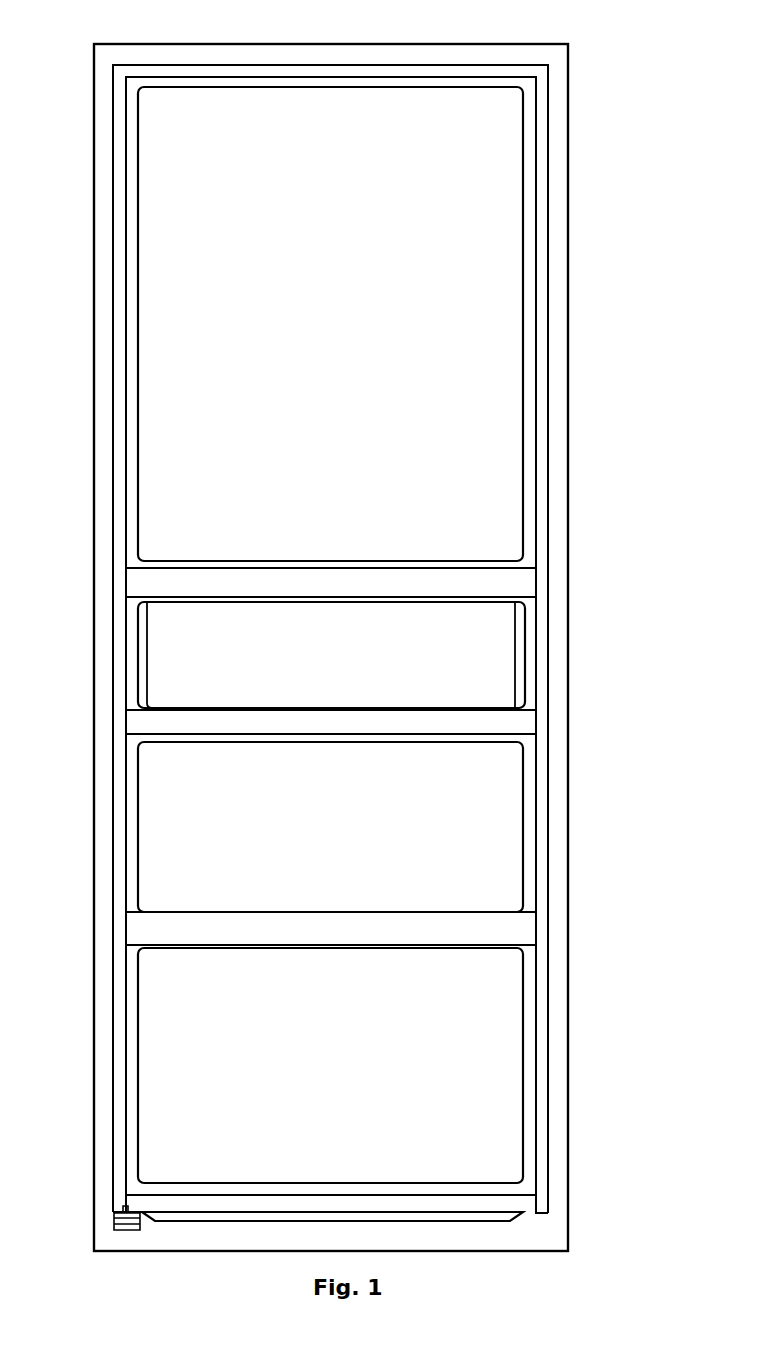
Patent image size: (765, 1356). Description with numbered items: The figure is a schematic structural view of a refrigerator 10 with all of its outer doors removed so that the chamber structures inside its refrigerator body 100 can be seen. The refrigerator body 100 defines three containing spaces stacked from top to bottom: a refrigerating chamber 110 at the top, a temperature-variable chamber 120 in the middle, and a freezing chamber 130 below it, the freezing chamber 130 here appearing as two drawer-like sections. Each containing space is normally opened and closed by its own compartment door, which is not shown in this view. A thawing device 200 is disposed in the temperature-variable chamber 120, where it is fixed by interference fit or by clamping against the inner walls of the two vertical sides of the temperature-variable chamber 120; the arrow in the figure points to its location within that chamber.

The refrigerator 10 is at (63, 28).
The refrigerator body 100 is at (558, 473).
The refrigerating chamber 110 is at (497, 305).
The temperature-variable chamber 120 is at (518, 639).
The freezing chamber 130 is at (497, 1038).
The thawing device 200 is at (182, 648).